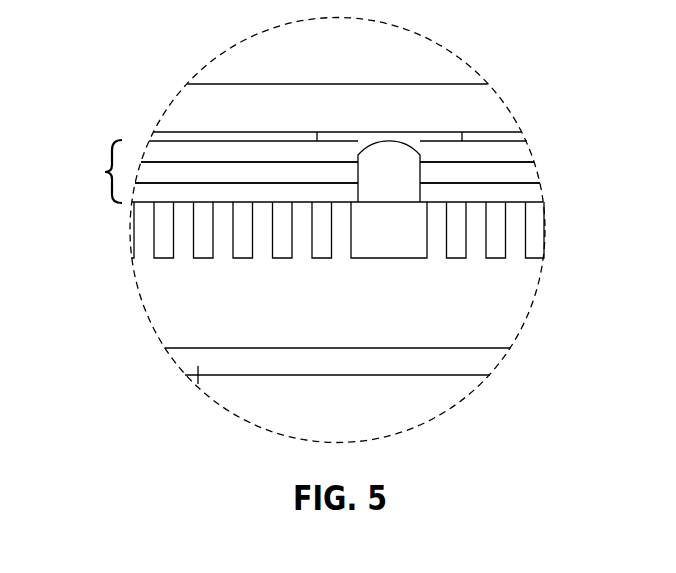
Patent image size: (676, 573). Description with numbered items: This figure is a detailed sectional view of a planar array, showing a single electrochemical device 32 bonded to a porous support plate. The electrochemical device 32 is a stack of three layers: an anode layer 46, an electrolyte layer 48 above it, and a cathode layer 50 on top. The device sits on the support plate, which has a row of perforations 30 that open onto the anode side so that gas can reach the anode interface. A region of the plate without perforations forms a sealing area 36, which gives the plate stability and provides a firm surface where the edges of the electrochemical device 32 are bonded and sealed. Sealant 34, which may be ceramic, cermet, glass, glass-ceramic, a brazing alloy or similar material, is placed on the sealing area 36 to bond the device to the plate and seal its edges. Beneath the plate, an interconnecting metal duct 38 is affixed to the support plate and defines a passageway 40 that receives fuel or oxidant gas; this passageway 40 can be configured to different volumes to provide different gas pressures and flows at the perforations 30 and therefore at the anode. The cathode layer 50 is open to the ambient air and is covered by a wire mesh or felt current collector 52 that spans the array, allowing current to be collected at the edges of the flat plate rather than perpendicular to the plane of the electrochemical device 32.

The perforations 30 is at (513, 247).
The electrochemical device 32 is at (95, 171).
The sealant 34 is at (389, 140).
The sealing areas 36 is at (381, 245).
The interconnecting duct 38 is at (198, 378).
The passageway 40 is at (163, 300).
The anode layer 46 is at (542, 197).
The electrolyte layer 48 is at (528, 178).
The cathode layer 50 is at (528, 152).
The current collector 52 is at (182, 115).